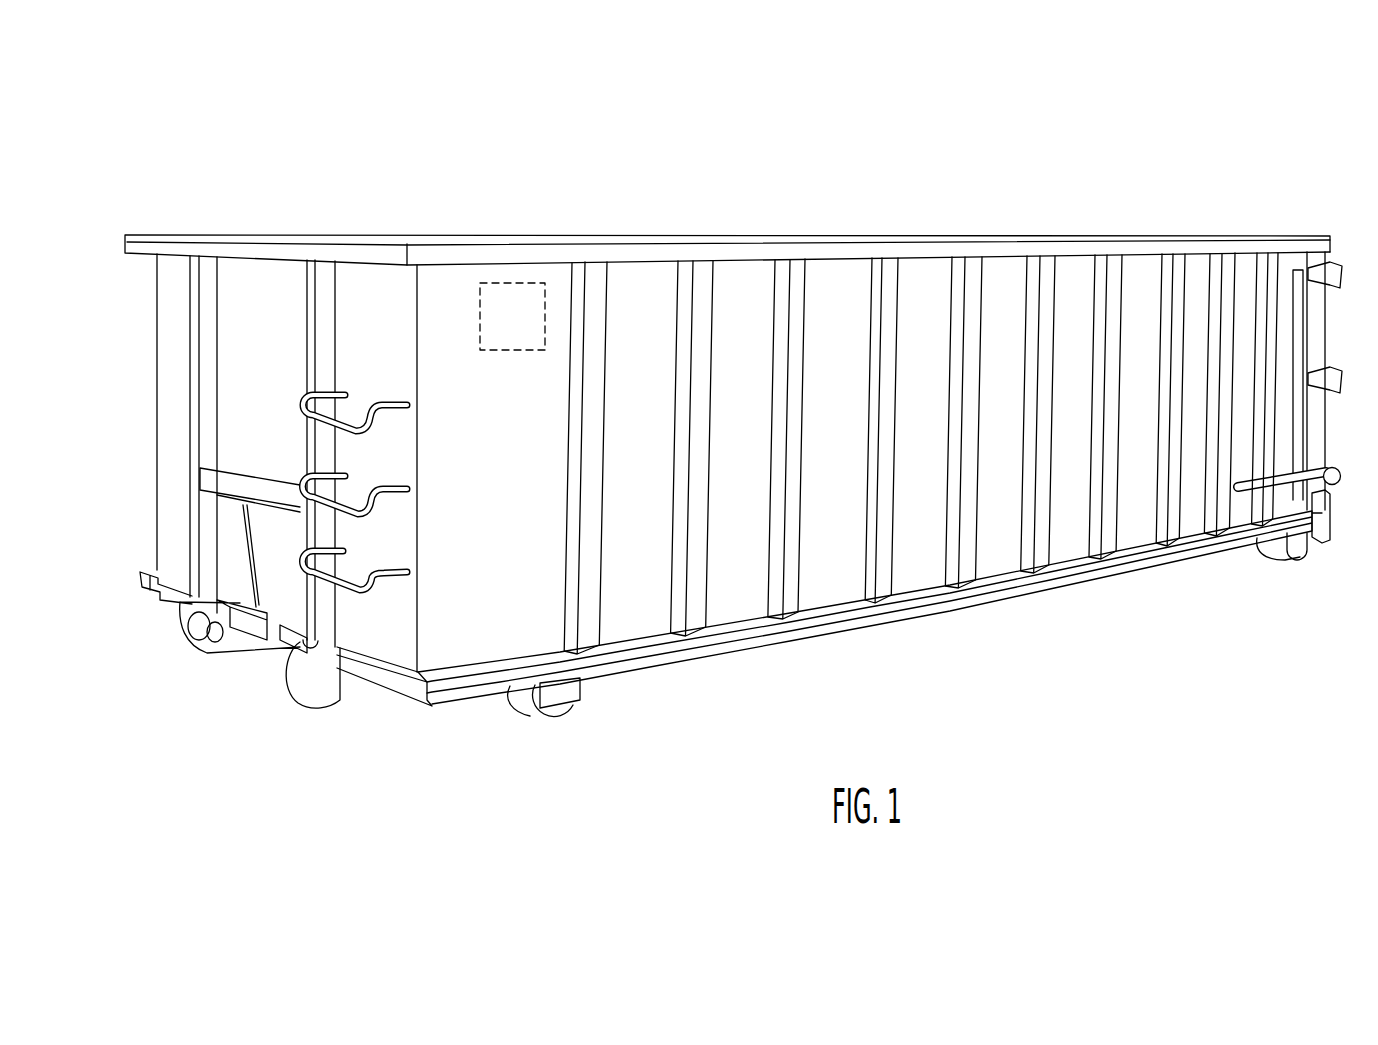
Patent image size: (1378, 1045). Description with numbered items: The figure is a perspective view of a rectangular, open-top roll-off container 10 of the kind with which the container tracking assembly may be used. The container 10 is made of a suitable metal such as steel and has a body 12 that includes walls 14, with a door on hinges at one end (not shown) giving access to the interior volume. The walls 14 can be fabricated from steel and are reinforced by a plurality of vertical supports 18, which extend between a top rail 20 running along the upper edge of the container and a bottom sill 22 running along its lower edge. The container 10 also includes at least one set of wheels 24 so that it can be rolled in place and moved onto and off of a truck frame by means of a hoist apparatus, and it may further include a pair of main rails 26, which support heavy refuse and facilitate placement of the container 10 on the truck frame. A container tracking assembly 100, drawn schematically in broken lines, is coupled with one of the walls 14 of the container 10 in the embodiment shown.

The roll-off container 10 is at (1040, 137).
The body 12 is at (640, 223).
The walls 14 is at (1070, 265).
The vertical supports 18 is at (1042, 490).
The top rail 20 is at (942, 248).
The bottom sill 22 is at (843, 612).
The wheels 24 is at (520, 703).
The main rails 26 is at (210, 647).
The container tracking assembly 100 is at (497, 336).